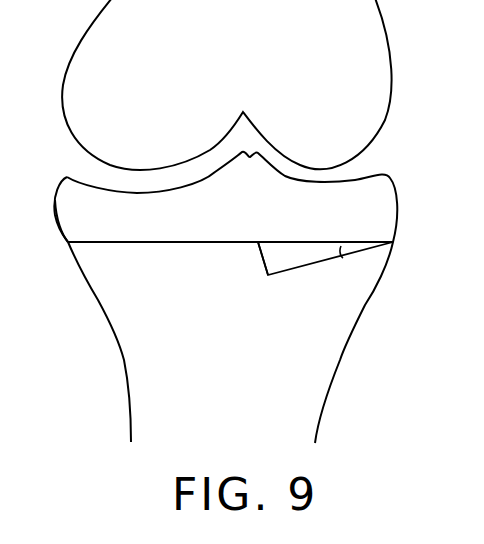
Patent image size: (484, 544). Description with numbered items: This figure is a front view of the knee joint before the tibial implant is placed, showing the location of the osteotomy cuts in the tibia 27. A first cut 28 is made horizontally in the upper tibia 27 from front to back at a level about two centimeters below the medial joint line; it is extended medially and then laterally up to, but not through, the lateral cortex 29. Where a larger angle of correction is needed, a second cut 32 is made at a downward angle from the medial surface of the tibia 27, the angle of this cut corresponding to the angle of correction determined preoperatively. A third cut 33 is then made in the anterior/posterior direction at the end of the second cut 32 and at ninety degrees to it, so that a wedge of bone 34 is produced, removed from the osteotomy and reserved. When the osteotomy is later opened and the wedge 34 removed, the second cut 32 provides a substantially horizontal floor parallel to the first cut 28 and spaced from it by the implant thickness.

The tibia 27 is at (308, 368).
The cut 28 is at (213, 242).
The lateral cortex 29 is at (65, 243).
The second cut 32 is at (305, 267).
The third cut 33 is at (258, 265).
The wedge of bone 34 is at (288, 257).